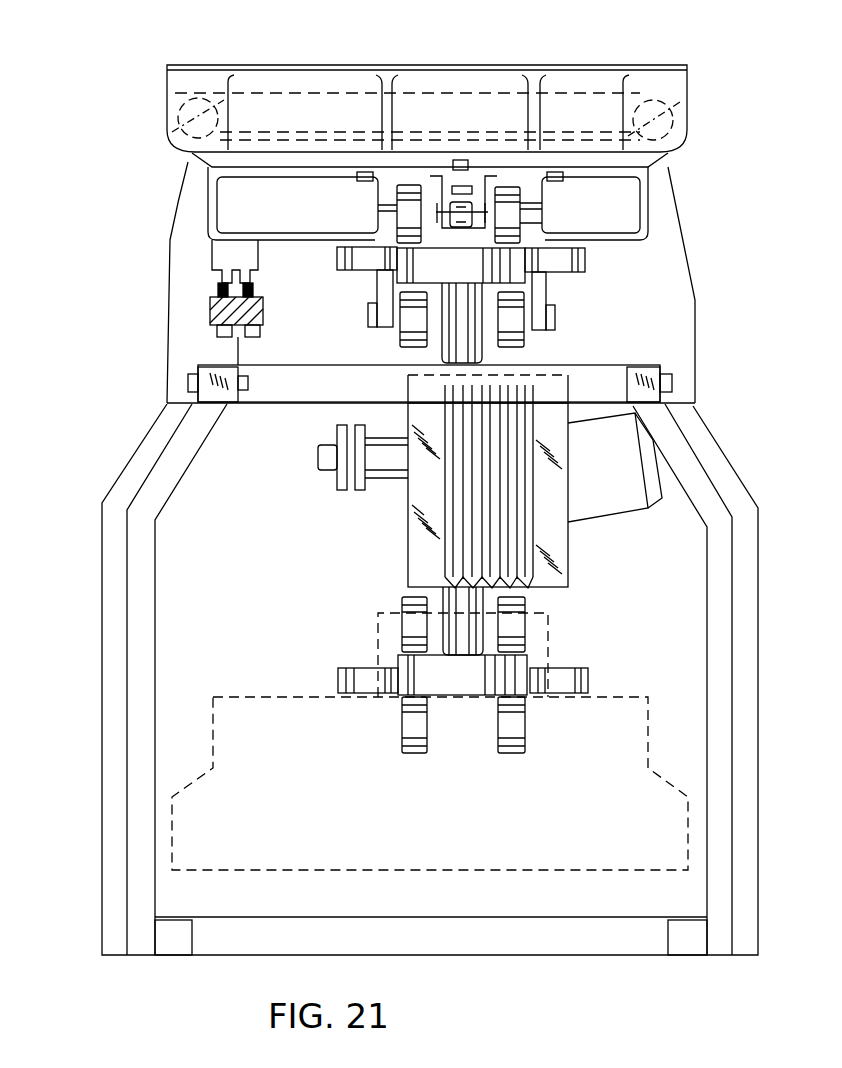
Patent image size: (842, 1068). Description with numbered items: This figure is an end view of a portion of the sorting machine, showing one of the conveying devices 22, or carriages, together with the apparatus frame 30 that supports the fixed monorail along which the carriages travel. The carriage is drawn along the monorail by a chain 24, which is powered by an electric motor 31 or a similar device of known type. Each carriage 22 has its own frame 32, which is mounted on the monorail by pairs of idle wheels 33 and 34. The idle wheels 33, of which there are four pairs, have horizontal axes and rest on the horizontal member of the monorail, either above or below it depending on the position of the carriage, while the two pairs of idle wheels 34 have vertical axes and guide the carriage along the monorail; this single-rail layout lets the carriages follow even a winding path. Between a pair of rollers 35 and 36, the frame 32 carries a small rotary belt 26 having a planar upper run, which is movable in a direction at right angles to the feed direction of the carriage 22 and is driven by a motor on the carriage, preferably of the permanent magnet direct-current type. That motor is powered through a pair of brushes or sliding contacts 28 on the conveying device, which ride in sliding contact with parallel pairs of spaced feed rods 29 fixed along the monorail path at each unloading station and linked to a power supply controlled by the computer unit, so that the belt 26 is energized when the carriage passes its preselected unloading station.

The conveying device 22 is at (128, 134).
The chain 24 is at (463, 183).
The small rotary belt 26 is at (458, 85).
The contacts 28 is at (226, 257).
The feed rods 29 is at (210, 308).
The frame 30 is at (757, 638).
The electric motor 31 is at (420, 552).
The frame 32 is at (648, 238).
The idle wheels 33 is at (403, 207).
The idle wheels 34 is at (338, 268).
The roller 35 is at (684, 148).
The roller 36 is at (176, 140).